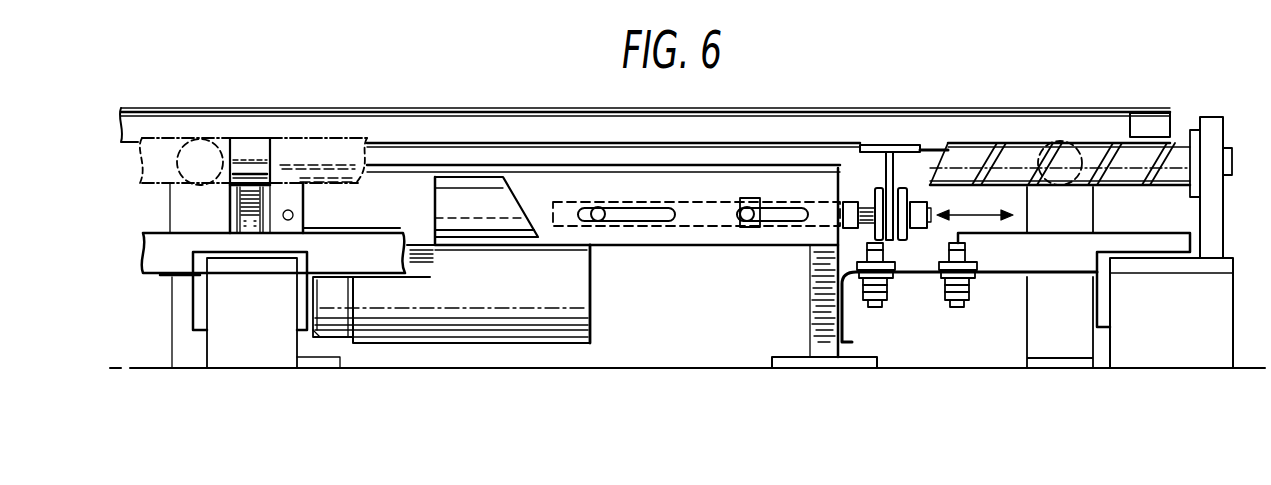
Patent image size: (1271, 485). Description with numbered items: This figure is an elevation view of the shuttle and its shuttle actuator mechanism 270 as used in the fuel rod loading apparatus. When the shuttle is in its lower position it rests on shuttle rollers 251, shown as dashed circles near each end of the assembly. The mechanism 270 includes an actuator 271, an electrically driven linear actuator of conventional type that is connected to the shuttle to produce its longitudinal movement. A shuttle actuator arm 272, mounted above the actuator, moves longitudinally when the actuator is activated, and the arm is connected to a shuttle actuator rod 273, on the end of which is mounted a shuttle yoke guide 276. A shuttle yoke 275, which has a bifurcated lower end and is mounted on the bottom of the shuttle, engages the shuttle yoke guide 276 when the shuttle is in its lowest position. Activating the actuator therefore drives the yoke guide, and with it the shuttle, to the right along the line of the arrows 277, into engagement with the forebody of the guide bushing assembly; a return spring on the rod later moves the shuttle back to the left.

The shuttle rollers 251 is at (192, 147).
The shuttle actuator mechanism 270 is at (683, 258).
The actuator 271 is at (592, 321).
The shuttle actuator arm 272 is at (468, 188).
The shuttle actuator rod 273 is at (787, 202).
The shuttle yoke 275 is at (920, 174).
The shuttle yoke guide 276 is at (876, 193).
The arrows 277 is at (975, 204).